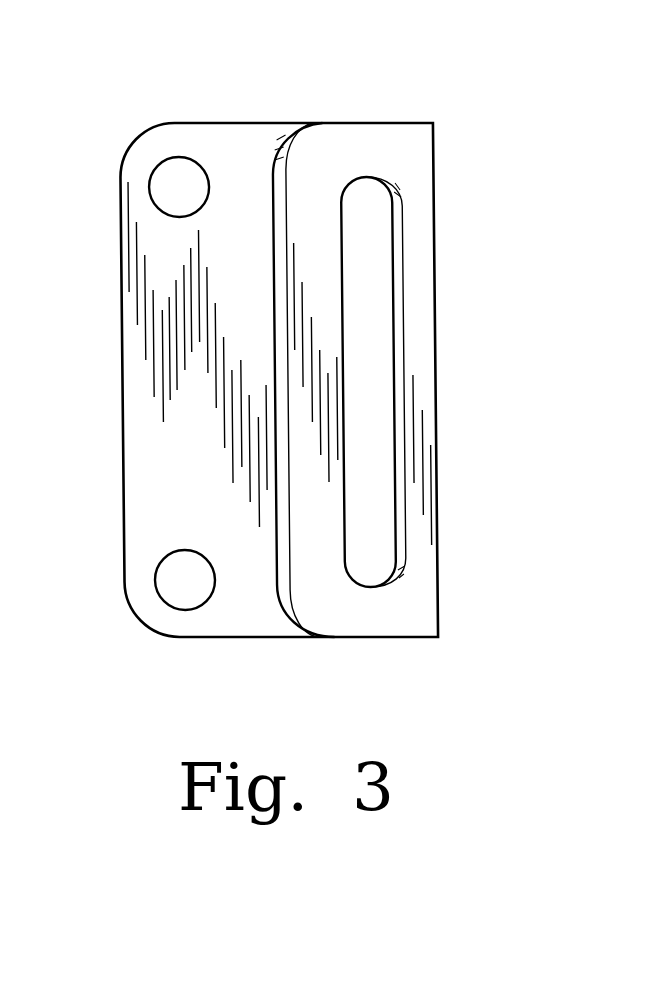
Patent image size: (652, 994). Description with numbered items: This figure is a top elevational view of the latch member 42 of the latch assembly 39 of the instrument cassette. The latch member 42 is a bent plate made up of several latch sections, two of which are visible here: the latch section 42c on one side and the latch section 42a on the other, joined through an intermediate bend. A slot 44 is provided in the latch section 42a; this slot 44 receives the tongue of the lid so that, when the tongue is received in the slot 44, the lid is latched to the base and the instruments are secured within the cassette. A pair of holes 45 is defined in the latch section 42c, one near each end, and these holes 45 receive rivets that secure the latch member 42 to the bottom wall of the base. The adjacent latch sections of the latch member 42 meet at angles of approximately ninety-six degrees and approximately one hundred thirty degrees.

The latch assembly 39 is at (272, 73).
The latch member 42 is at (508, 362).
The latch section 42a is at (360, 609).
The latch section 42c is at (141, 450).
The slot 44 is at (392, 295).
The holes 45 is at (174, 154).